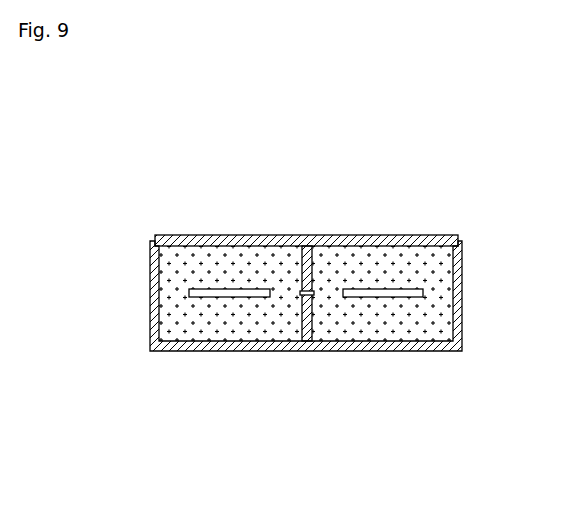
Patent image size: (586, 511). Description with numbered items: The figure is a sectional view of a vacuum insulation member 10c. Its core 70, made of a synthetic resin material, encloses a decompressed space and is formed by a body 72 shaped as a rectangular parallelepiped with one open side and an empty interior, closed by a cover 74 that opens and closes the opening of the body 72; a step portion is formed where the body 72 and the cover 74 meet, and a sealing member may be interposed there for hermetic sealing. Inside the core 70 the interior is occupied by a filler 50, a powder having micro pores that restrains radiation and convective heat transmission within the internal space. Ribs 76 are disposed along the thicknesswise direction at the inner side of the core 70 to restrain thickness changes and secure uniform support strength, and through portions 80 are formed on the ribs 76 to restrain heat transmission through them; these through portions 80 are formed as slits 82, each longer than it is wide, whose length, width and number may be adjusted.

The vacuum insulation member 10c is at (137, 165).
The core 70 is at (333, 117).
The body 72 is at (152, 272).
The cover 74 is at (268, 242).
The ribs 76 is at (313, 257).
The filler 50 is at (393, 322).
The through portions 80 is at (230, 433).
The slits 82 is at (235, 297).